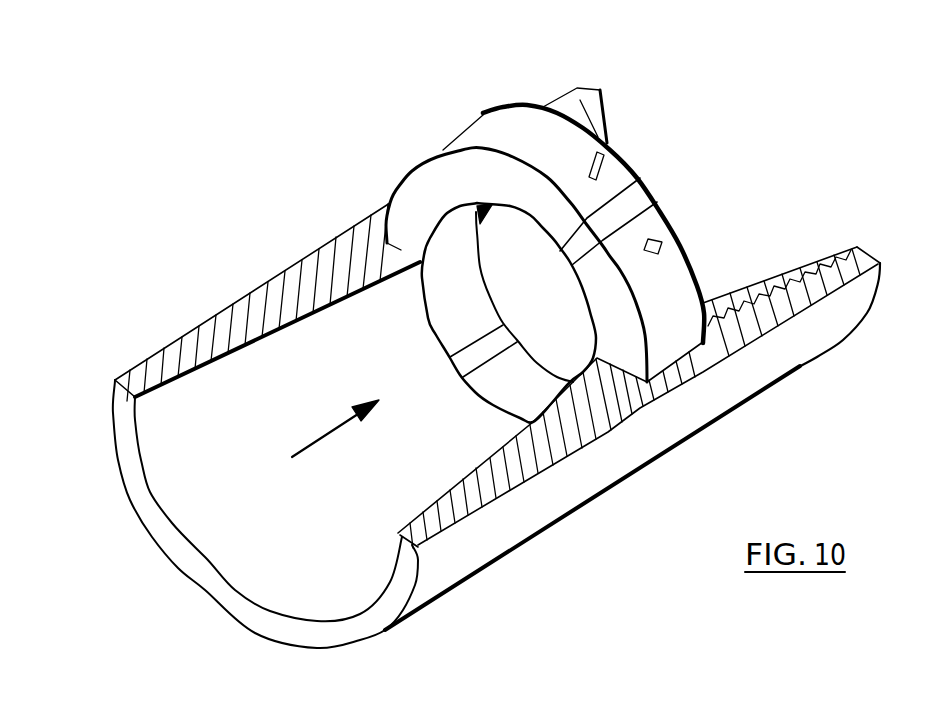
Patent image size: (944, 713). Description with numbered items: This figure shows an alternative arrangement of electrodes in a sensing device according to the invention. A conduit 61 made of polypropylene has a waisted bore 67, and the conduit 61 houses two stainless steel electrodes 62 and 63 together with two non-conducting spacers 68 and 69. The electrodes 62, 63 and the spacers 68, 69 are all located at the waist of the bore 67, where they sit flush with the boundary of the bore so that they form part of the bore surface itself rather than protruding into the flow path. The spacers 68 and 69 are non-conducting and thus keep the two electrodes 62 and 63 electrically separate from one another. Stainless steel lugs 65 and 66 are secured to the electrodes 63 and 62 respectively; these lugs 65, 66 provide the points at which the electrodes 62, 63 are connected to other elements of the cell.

The conduit 61 is at (487, 533).
The electrode 62 is at (488, 139).
The electrode 63 is at (673, 280).
The lug 65 is at (662, 240).
The lug 66 is at (605, 150).
The waisted bore 67 is at (318, 388).
The non-conducting spacer 68 is at (478, 343).
The non-conducting spacer 69 is at (640, 197).